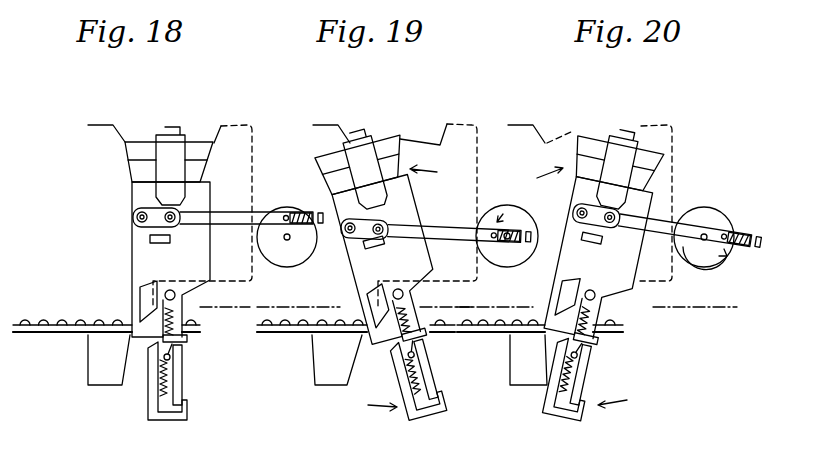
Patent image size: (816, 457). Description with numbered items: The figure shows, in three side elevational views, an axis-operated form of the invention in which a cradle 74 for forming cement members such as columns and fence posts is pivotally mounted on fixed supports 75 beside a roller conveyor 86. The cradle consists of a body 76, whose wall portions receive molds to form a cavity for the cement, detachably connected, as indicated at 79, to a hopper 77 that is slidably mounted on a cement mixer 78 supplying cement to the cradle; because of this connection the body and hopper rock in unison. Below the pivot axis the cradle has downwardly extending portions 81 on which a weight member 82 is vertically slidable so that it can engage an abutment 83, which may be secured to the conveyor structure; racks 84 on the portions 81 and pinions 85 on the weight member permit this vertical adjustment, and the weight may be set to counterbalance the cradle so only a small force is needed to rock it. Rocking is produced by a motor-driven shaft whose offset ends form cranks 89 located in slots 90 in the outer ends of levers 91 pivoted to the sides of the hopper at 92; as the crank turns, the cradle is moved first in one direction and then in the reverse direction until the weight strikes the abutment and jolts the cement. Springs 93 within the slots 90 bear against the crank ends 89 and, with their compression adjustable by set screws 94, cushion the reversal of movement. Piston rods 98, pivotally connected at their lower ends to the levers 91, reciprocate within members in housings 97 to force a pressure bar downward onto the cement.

In FIG. 18, the cradle 74 is at (197, 142).
In FIG. 19, the cradle 74 is at (378, 142).
In FIG. 20, the cradle 74 is at (660, 155).
In FIG. 18, the fixed supports 75 is at (165, 295).
In FIG. 19, the fixed supports 75 is at (403, 293).
In FIG. 20, the fixed supports 75 is at (588, 290).
In FIG. 18, the body 76 is at (142, 262).
In FIG. 19, the body 76 is at (355, 283).
In FIG. 20, the body 76 is at (638, 287).
In FIG. 18, the hopper 77 is at (132, 170).
In FIG. 19, the hopper 77 is at (393, 165).
In FIG. 20, the hopper 77 is at (650, 182).
In FIG. 18, the cement mixer 78 is at (243, 124).
In FIG. 19, the cement mixer 78 is at (465, 125).
In FIG. 20, the cement mixer 78 is at (560, 137).
In FIG. 18, the detachable connection 79 is at (150, 240).
In FIG. 19, the detachable connection 79 is at (368, 250).
In FIG. 20, the detachable connection 79 is at (601, 246).
In FIG. 18, the downwardly extending portions 81 is at (182, 378).
In FIG. 19, the downwardly extending portions 81 is at (418, 368).
In FIG. 20, the downwardly extending portions 81 is at (577, 373).
In FIG. 18, the weight member 82 is at (152, 407).
In FIG. 19, the weight member 82 is at (410, 408).
In FIG. 20, the weight member 82 is at (547, 397).
In FIG. 18, the abutment 83 is at (100, 377).
In FIG. 19, the abutment 83 is at (332, 377).
In FIG. 20, the abutment 83 is at (512, 372).
In FIG. 18, the racks 84 is at (167, 390).
In FIG. 19, the racks 84 is at (433, 383).
In FIG. 20, the racks 84 is at (580, 383).
In FIG. 18, the pinions 85 is at (185, 330).
In FIG. 19, the pinions 85 is at (418, 325).
In FIG. 20, the pinions 85 is at (608, 331).
In FIG. 18, the roller conveyor 86 is at (80, 327).
In FIG. 19, the roller conveyor 86 is at (318, 325).
In FIG. 20, the roller conveyor 86 is at (502, 325).
In FIG. 18, the cranks 89 is at (287, 213).
In FIG. 19, the cranks 89 is at (492, 238).
In FIG. 20, the cranks 89 is at (730, 233).
In FIG. 18, the slots 90 is at (287, 237).
In FIG. 19, the slots 90 is at (512, 235).
In FIG. 20, the slots 90 is at (740, 255).
In FIG. 18, the levers 91 is at (227, 215).
In FIG. 19, the levers 91 is at (450, 230).
In FIG. 20, the levers 91 is at (662, 233).
In FIG. 18, the lever pivot 92 is at (137, 217).
In FIG. 19, the lever pivot 92 is at (345, 230).
In FIG. 20, the lever pivot 92 is at (580, 212).
In FIG. 18, the springs 93 is at (295, 212).
In FIG. 19, the springs 93 is at (507, 230).
In FIG. 20, the springs 93 is at (742, 247).
In FIG. 20, the set screws 94 is at (760, 240).
In FIG. 18, the housings 97 is at (167, 148).
In FIG. 19, the housings 97 is at (353, 155).
In FIG. 20, the housings 97 is at (618, 152).
In FIG. 18, the piston rods 98 is at (177, 212).
In FIG. 19, the piston rods 98 is at (380, 218).
In FIG. 20, the piston rods 98 is at (622, 212).